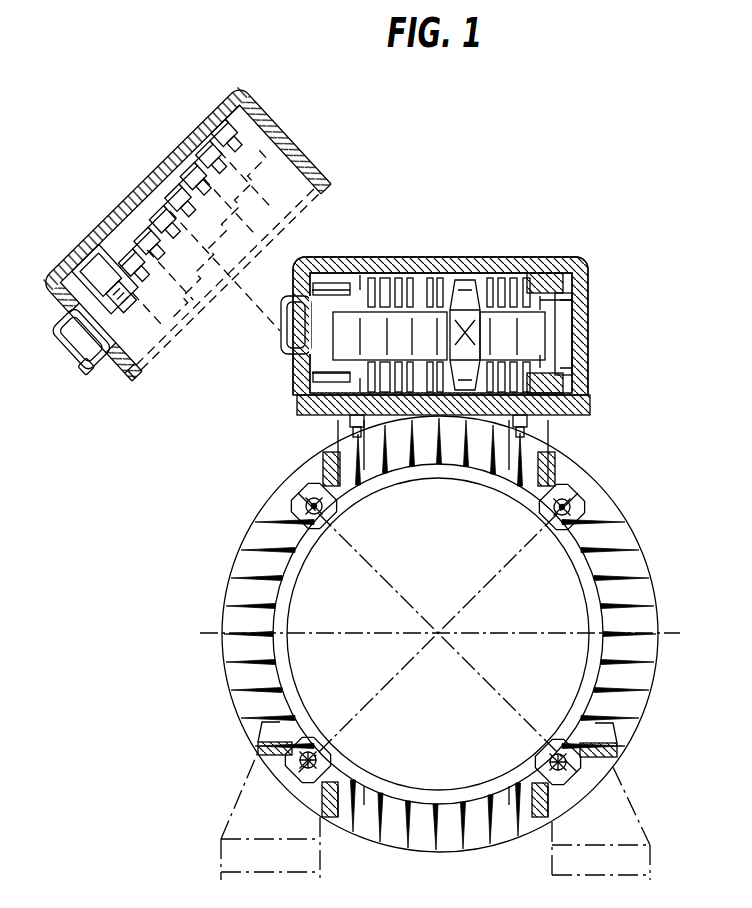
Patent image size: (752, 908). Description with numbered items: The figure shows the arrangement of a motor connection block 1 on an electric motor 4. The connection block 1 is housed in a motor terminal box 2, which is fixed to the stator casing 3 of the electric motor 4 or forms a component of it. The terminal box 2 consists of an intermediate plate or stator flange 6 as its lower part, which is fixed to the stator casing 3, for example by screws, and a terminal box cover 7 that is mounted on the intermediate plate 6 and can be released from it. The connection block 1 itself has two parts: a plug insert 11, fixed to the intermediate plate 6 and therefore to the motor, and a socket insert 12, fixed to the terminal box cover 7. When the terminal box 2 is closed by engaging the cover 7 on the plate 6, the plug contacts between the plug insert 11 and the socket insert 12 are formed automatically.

The motor connection block 1 is at (397, 327).
The motor terminal box 2 is at (343, 261).
The stator casing 3 is at (235, 618).
The electric motor 4 is at (633, 517).
The intermediate plate or stator flange 6 is at (583, 411).
The terminal box cover 7 is at (590, 283).
The plug insert 11 is at (330, 383).
The socket insert 12 is at (285, 126).